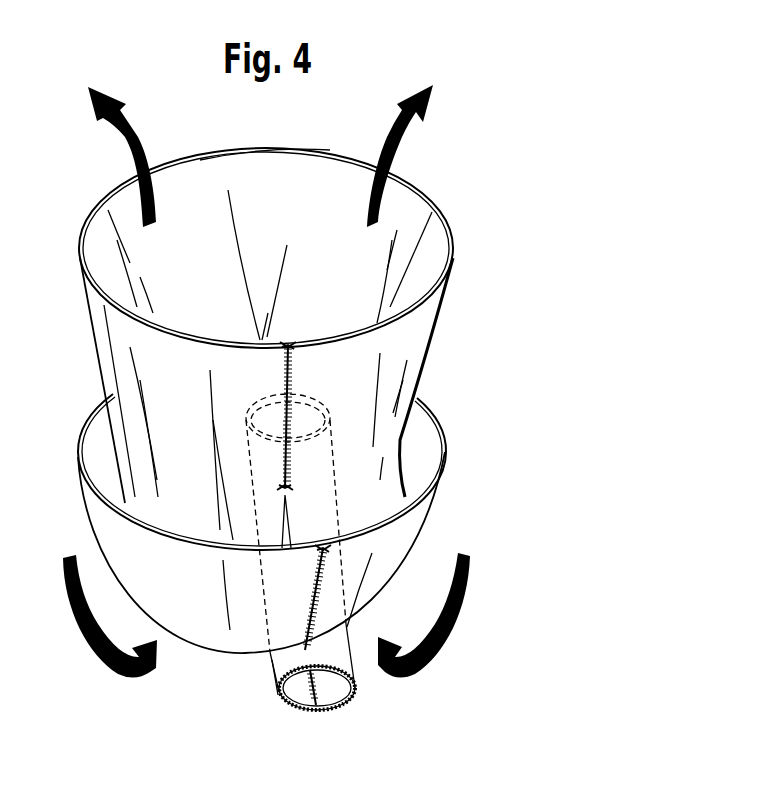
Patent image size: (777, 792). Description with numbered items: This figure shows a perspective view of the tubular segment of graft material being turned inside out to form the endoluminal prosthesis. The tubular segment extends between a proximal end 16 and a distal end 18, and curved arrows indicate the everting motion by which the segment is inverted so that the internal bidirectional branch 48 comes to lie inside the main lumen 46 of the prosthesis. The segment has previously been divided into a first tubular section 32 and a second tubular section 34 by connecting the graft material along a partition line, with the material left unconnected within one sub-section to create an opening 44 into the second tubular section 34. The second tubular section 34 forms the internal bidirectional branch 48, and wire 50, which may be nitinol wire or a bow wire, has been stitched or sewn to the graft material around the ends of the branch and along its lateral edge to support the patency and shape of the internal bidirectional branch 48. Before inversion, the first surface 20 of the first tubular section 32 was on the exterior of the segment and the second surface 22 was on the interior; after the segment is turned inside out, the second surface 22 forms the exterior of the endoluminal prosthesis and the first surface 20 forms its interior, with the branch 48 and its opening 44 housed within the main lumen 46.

The proximal end 16 is at (444, 450).
The distal end 18 is at (428, 212).
The first surface 20 is at (316, 176).
The second surface 22 is at (415, 337).
The first tubular section 32 is at (395, 383).
The second tubular section 34 is at (353, 662).
The opening 44 is at (293, 533).
The main lumen 46 is at (197, 185).
The internal bidirectional branch 48 is at (273, 663).
The wire 50 is at (310, 697).